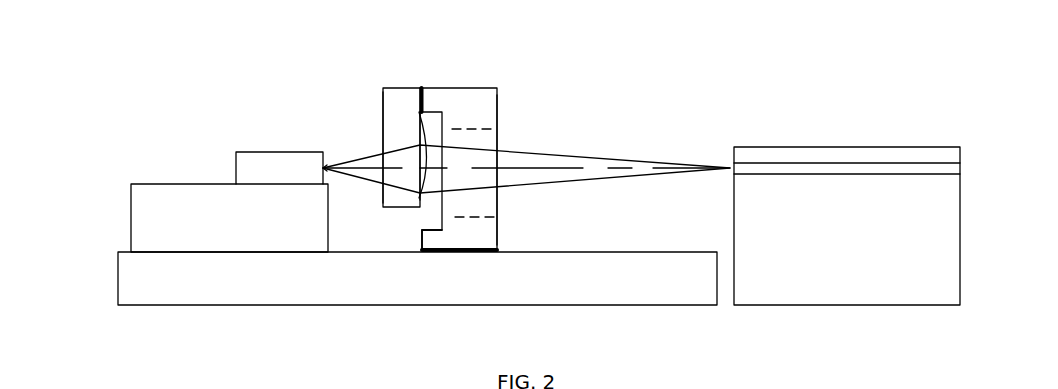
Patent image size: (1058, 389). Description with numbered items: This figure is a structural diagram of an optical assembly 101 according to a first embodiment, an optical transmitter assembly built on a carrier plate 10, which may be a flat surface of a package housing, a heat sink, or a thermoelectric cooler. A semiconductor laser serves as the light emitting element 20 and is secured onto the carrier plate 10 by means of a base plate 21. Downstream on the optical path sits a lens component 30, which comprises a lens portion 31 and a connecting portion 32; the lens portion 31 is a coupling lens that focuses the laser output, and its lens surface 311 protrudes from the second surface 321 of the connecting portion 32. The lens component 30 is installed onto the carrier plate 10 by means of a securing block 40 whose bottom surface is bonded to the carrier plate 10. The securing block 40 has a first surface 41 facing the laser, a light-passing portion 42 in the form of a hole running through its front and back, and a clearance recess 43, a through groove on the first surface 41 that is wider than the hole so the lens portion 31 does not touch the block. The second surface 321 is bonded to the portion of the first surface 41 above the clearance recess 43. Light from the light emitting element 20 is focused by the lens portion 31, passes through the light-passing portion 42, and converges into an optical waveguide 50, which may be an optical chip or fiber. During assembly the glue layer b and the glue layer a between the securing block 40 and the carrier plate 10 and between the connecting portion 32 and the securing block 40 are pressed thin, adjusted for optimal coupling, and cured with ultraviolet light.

The optical assembly 101 is at (78, 54).
The carrier plate 10 is at (200, 287).
The light emitting element 20 is at (277, 162).
The base plate 21 is at (203, 195).
The lens component 30 is at (400, 88).
The lens portion 31 is at (395, 177).
The lens surface 311 is at (428, 201).
The connecting portion 32 is at (393, 100).
The second surface 321 is at (423, 120).
The securing block 40 is at (481, 94).
The first surface 41 is at (422, 232).
The light-passing portion 42 is at (492, 146).
The clearance recess 43 is at (437, 231).
The optical waveguide 50 is at (776, 157).
The glue layer a is at (422, 90).
The glue layer b is at (500, 250).